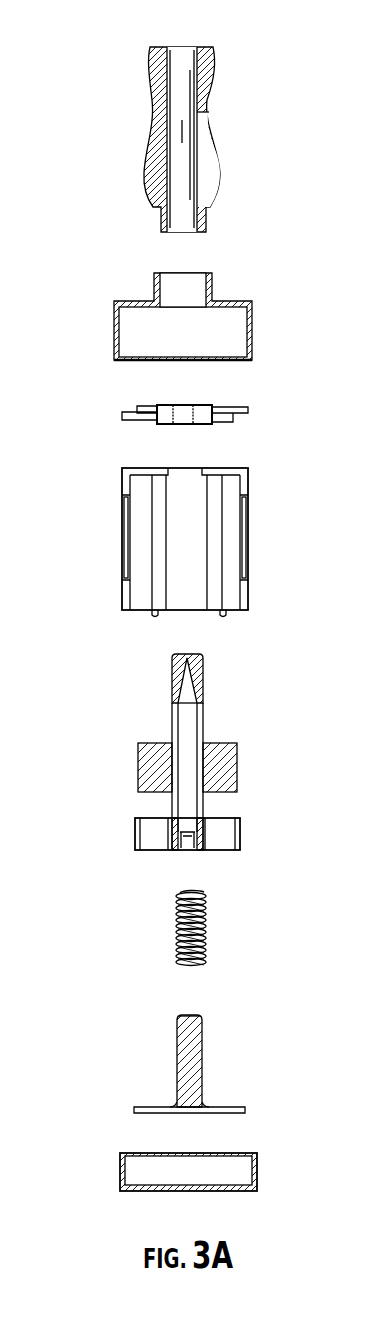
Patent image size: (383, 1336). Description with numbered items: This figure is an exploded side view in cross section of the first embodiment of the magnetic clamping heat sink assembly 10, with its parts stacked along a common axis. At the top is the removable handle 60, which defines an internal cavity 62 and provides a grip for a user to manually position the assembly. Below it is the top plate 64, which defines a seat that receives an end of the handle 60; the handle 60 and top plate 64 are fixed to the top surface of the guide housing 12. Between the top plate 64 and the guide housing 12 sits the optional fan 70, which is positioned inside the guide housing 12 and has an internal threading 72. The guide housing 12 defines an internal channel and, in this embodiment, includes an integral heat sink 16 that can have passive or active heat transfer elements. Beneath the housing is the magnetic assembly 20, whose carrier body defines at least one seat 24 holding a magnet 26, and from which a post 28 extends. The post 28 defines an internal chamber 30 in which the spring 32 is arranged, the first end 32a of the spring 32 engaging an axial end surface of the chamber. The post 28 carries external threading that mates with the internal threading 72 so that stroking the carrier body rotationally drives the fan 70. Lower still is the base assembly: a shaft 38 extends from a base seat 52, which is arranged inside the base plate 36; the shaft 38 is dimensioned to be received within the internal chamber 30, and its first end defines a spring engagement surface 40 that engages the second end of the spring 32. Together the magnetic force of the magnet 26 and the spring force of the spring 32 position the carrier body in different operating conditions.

The magnetic clamping heat sink assembly 10 is at (100, 178).
The guide housing 12 is at (177, 497).
The heat sink 16 is at (122, 540).
The magnetic assembly 20 is at (122, 822).
The seat 24 is at (147, 838).
The magnet 26 is at (147, 765).
The post 28 is at (203, 680).
The internal chamber 30 is at (190, 730).
The spring 32 is at (176, 930).
The first end of the spring 32a is at (190, 893).
The base plate 36 is at (122, 1172).
The shaft 38 is at (193, 1055).
The spring engagement surface 40 is at (188, 1013).
The base seat 52 is at (232, 1108).
The handle 60 is at (207, 95).
The internal cavity 62 is at (183, 75).
The top plate 64 is at (125, 315).
The fan 70 is at (222, 405).
The internal threading 72 is at (187, 405).